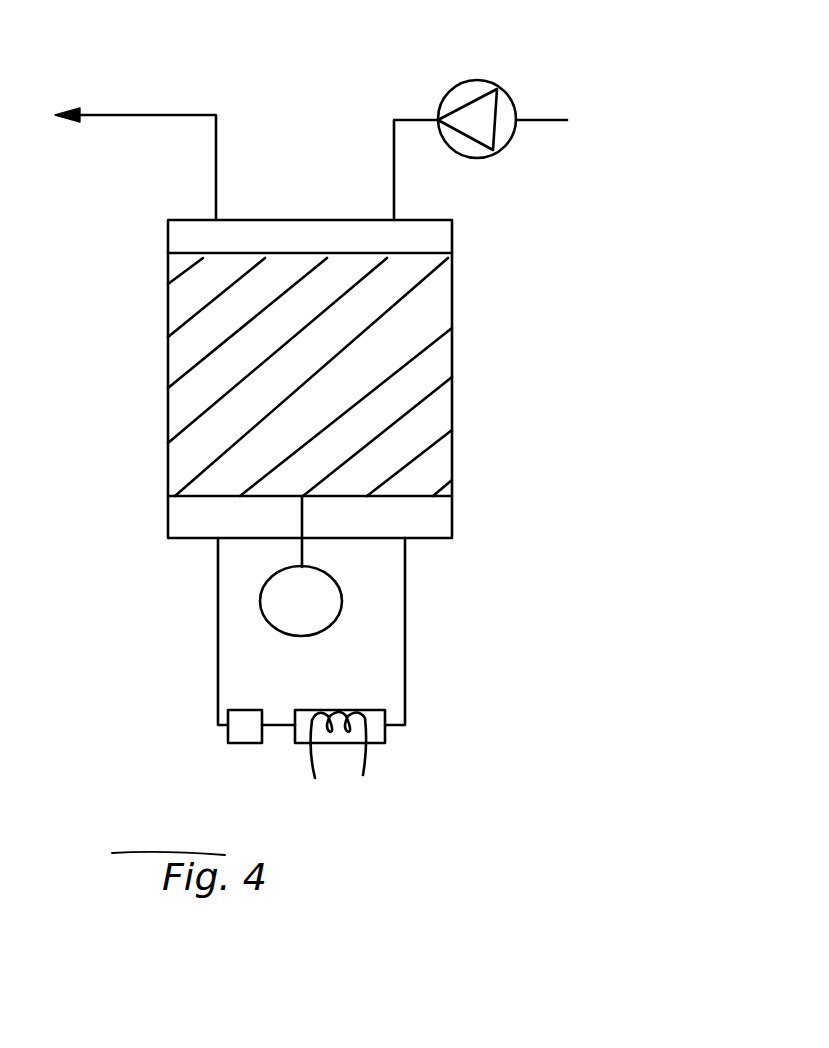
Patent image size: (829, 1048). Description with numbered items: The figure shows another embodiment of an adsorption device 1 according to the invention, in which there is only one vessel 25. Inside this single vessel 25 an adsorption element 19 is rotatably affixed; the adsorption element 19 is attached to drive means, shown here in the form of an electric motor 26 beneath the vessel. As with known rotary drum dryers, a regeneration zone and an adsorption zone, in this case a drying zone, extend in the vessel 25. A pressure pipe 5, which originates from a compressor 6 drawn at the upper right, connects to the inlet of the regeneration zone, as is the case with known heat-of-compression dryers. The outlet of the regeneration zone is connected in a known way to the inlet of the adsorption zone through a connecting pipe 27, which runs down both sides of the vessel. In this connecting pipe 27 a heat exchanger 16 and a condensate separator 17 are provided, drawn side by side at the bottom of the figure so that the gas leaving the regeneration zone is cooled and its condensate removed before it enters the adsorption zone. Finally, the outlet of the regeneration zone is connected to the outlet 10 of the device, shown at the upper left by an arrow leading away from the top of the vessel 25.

The adsorption device 1 is at (503, 401).
The pressure pipe 5 is at (394, 146).
The compressor 6 is at (481, 80).
The outlet 10 is at (84, 120).
The heat exchanger 16 is at (385, 743).
The condensate separator 17 is at (245, 732).
The adsorption element 19 is at (402, 445).
The vessel 25 is at (453, 287).
The electric motor 26 is at (327, 605).
The connecting pipe 27 is at (405, 677).